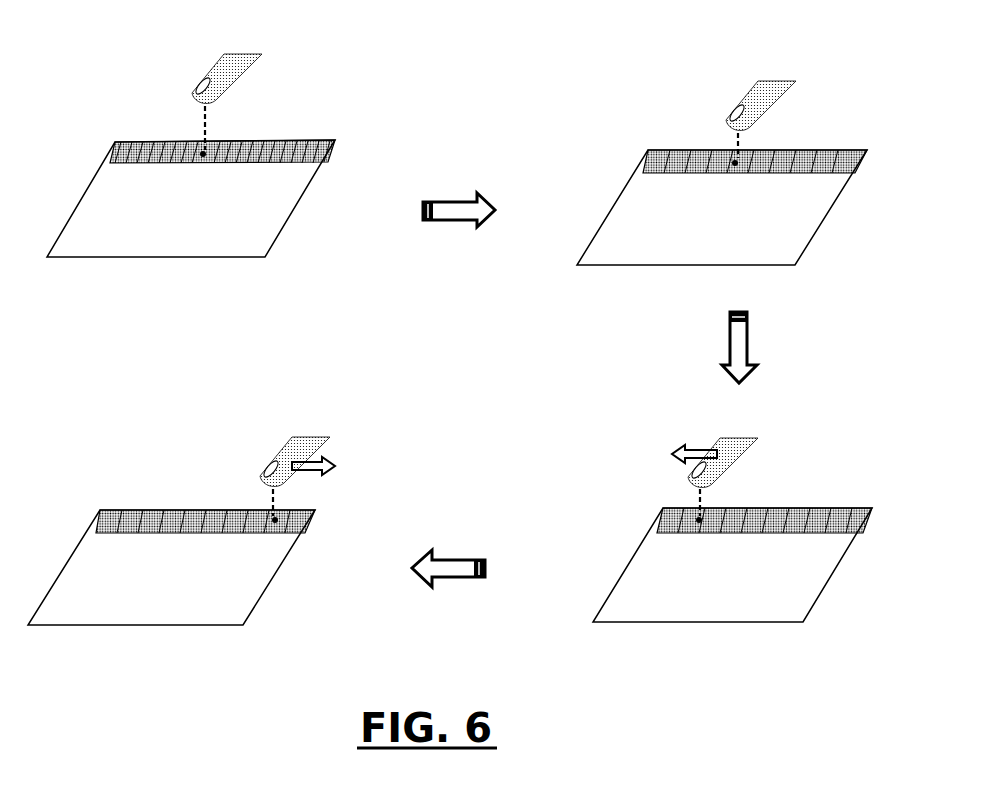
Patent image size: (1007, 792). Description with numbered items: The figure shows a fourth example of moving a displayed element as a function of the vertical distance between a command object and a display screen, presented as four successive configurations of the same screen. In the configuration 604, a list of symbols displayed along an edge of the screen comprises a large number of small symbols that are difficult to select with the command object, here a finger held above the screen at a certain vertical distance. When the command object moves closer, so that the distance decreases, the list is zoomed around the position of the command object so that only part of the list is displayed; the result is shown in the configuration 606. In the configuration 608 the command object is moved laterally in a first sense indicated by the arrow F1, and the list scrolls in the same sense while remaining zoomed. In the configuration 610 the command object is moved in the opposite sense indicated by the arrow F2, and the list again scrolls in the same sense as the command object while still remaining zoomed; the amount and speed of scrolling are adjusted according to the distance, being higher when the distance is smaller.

The configuration 604 is at (104, 71).
The configuration 606 is at (602, 77).
The configuration 608 is at (578, 455).
The configuration 610 is at (114, 472).
The arrow F1 is at (693, 454).
The arrow F2 is at (332, 470).